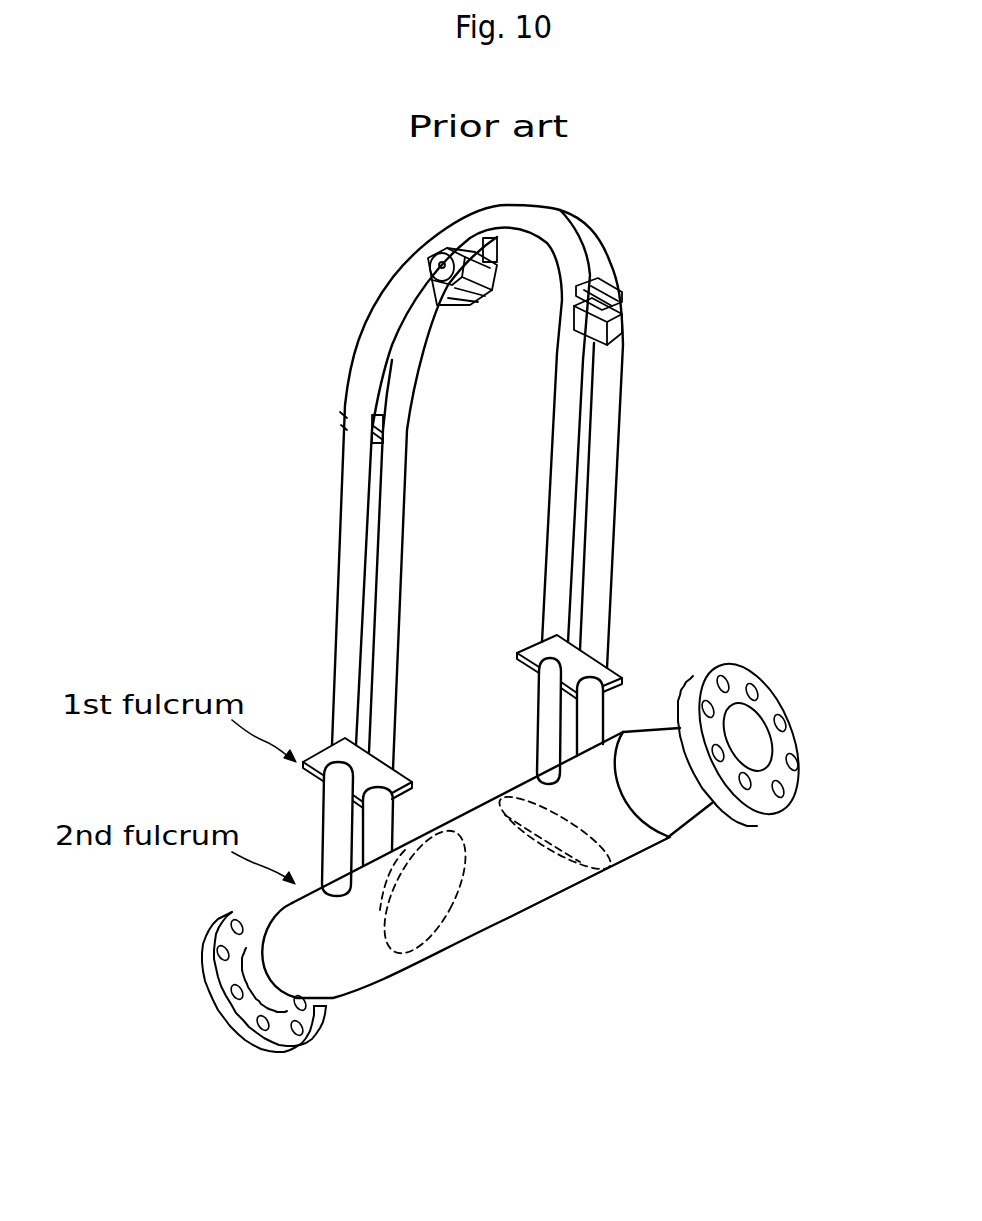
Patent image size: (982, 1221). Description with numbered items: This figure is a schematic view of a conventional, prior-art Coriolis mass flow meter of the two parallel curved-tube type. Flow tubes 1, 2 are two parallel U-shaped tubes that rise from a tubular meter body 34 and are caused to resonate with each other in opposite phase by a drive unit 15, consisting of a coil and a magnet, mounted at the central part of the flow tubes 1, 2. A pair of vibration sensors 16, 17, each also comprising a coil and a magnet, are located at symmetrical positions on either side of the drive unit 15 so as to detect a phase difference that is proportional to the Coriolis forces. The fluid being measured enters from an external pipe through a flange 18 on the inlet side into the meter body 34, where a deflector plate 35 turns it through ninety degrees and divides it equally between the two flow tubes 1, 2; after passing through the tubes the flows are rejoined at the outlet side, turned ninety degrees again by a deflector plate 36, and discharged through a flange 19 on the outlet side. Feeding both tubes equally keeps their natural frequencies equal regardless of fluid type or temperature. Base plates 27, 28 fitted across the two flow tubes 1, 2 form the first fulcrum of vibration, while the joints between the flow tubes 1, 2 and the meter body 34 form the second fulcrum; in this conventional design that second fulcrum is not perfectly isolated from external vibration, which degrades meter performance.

The flow tube 1 is at (553, 440).
The flow tube 2 is at (607, 447).
The drive unit 15 is at (443, 253).
The vibration sensor 16 is at (343, 412).
The vibration sensor 17 is at (607, 293).
The flange on the inlet side 18 is at (203, 956).
The flange on the outlet side 19 is at (740, 682).
The base plate 27 is at (370, 750).
The base plate 28 is at (587, 650).
The tubular meter body 34 is at (347, 963).
The deflector plate 35 is at (440, 920).
The deflector plate 36 is at (610, 865).